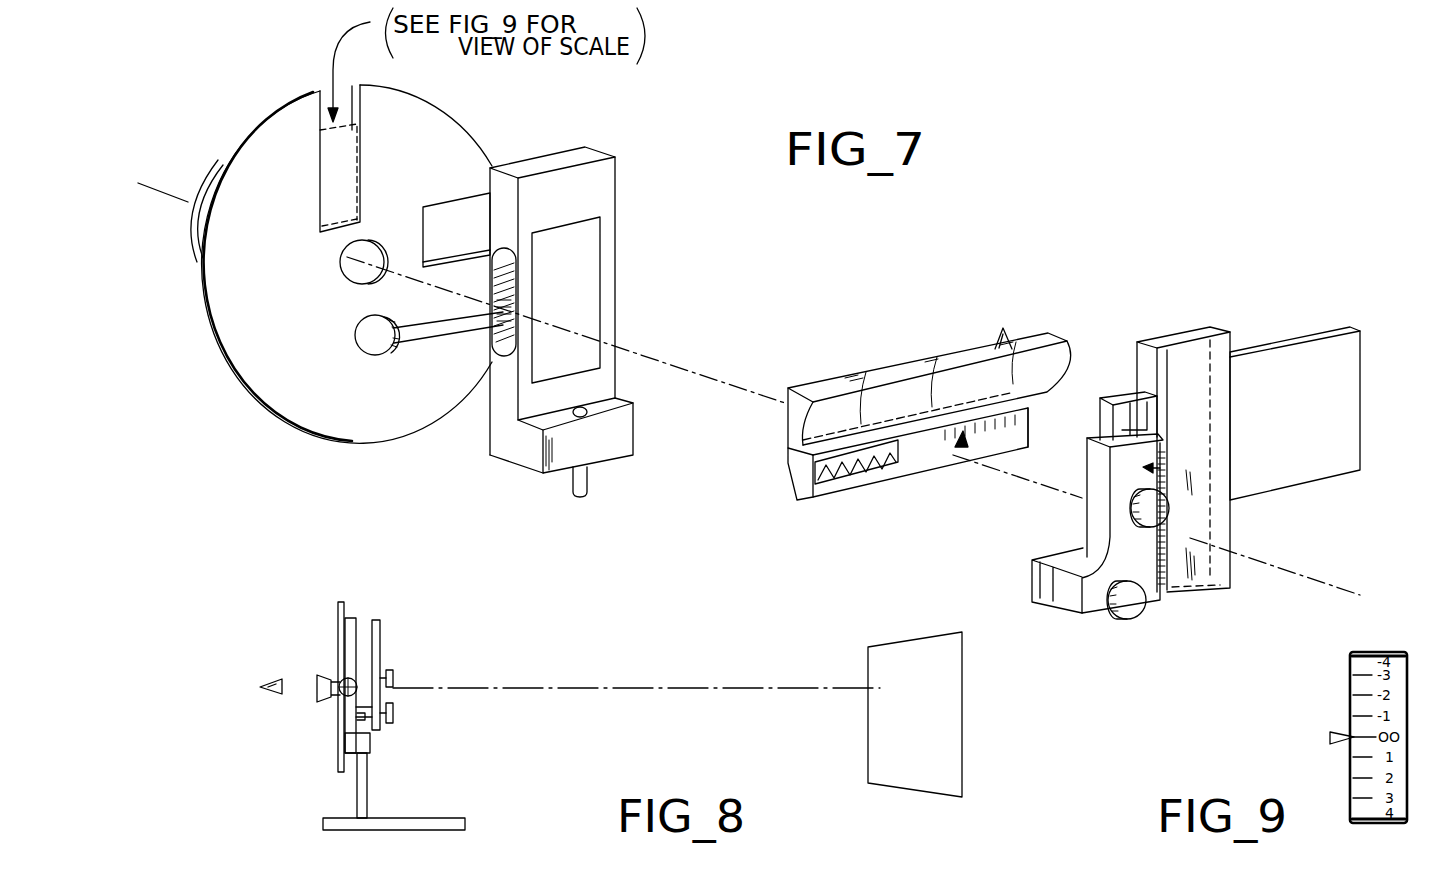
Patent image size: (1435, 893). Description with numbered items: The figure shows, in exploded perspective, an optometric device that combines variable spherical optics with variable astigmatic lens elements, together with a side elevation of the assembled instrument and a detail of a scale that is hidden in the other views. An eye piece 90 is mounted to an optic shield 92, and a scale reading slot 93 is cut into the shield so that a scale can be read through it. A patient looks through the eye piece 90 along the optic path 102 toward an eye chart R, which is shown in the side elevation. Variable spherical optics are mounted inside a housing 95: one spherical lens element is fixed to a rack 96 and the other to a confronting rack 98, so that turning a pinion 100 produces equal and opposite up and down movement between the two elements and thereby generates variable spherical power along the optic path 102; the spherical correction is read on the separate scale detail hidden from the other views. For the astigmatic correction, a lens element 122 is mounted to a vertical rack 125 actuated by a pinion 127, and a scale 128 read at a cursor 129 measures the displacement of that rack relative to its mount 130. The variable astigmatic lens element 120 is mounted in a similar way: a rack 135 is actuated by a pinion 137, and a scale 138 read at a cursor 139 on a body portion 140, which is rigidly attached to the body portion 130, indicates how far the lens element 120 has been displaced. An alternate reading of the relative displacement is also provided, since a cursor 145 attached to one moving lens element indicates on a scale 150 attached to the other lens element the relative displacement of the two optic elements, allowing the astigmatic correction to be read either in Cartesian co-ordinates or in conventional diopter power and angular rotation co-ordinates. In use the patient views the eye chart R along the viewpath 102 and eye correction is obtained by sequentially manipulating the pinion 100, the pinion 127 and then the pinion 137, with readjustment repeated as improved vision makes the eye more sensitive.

In FIG. 7, the eye piece 90 is at (203, 182).
In FIG. 8, the eye piece 90 is at (322, 672).
In FIG. 7, the optic shield 92 is at (263, 284).
In FIG. 7, the scale reading slot 93 is at (360, 168).
In FIG. 7, the housing 95 is at (516, 464).
In FIG. 7, the rack 96 is at (503, 250).
In FIG. 7, the rack 98 is at (510, 352).
In FIG. 7, the pinion 100 is at (373, 348).
In FIG. 8, the pinion 100 is at (357, 672).
In FIG. 7, the optic path 102 is at (663, 352).
In FIG. 8, the optic path 102 is at (459, 682).
In FIG. 7, the variable astigmatic lens element 120 is at (790, 422).
In FIG. 7, the lens element 122 is at (1190, 523).
In FIG. 7, the vertical rack 125 is at (1132, 410).
In FIG. 7, the pinion 127 is at (1143, 510).
In FIG. 8, the pinion 127 is at (390, 670).
In FIG. 7, the scale 128 is at (1167, 450).
In FIG. 7, the cursor 129 is at (1143, 471).
In FIG. 7, the mount for the rack 130 is at (1095, 530).
In FIG. 7, the rack 135 is at (860, 492).
In FIG. 7, the pinion 137 is at (807, 500).
In FIG. 8, the pinion 137 is at (395, 713).
In FIG. 7, the scale 138 is at (1032, 420).
In FIG. 7, the cursor 139 is at (913, 447).
In FIG. 7, the body portion 140 is at (952, 462).
In FIG. 7, the cursor 145 is at (1003, 328).
In FIG. 7, the scale 150 is at (1308, 434).
In FIG. 8, the eye chart R is at (866, 748).